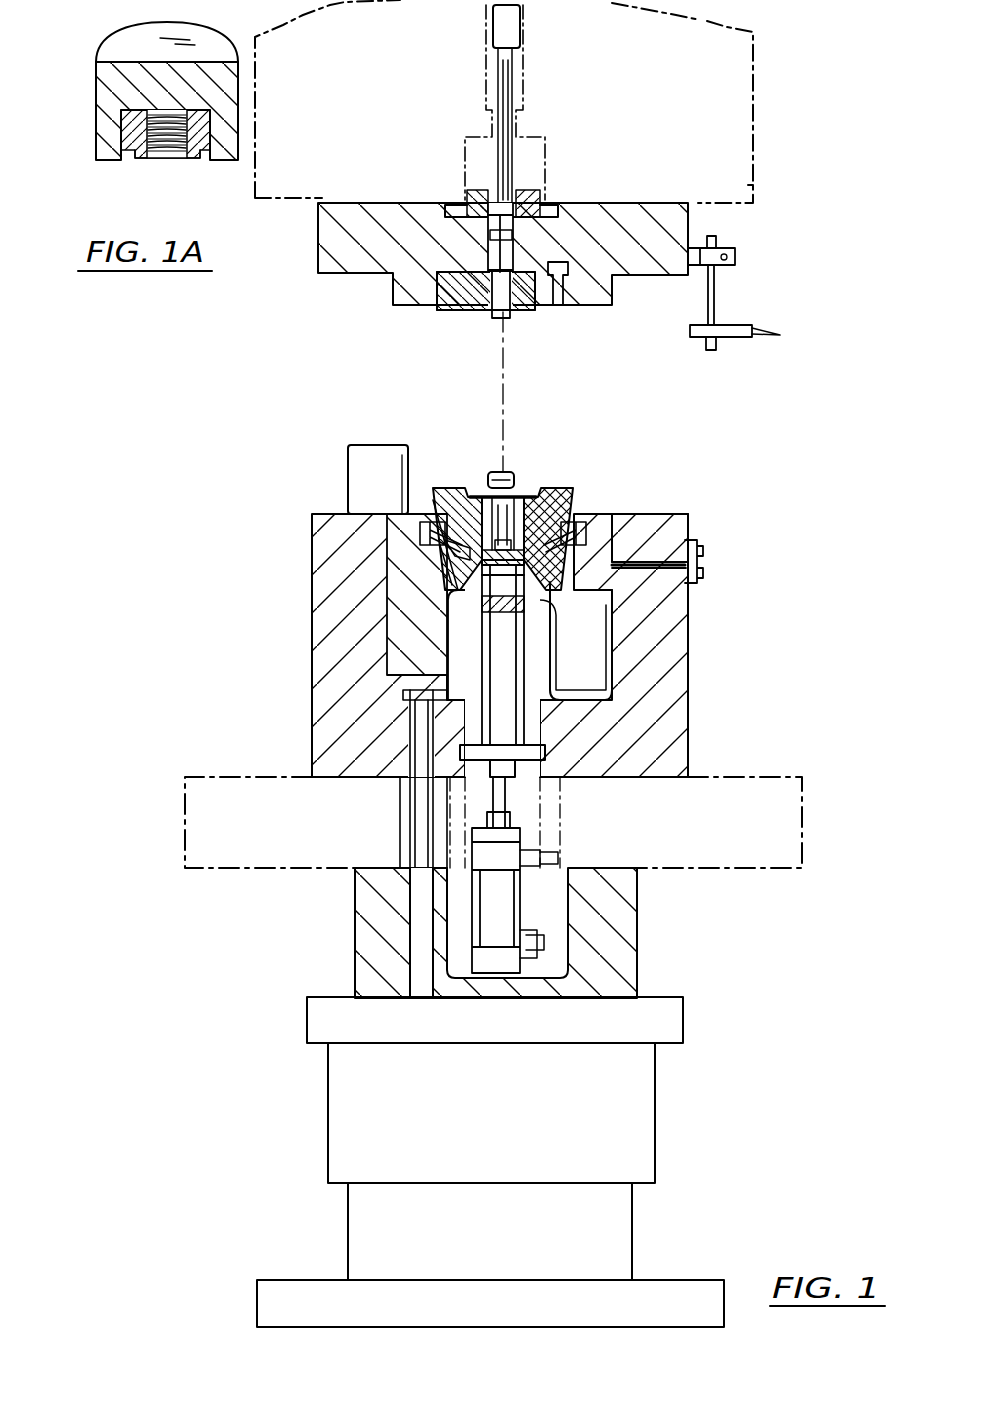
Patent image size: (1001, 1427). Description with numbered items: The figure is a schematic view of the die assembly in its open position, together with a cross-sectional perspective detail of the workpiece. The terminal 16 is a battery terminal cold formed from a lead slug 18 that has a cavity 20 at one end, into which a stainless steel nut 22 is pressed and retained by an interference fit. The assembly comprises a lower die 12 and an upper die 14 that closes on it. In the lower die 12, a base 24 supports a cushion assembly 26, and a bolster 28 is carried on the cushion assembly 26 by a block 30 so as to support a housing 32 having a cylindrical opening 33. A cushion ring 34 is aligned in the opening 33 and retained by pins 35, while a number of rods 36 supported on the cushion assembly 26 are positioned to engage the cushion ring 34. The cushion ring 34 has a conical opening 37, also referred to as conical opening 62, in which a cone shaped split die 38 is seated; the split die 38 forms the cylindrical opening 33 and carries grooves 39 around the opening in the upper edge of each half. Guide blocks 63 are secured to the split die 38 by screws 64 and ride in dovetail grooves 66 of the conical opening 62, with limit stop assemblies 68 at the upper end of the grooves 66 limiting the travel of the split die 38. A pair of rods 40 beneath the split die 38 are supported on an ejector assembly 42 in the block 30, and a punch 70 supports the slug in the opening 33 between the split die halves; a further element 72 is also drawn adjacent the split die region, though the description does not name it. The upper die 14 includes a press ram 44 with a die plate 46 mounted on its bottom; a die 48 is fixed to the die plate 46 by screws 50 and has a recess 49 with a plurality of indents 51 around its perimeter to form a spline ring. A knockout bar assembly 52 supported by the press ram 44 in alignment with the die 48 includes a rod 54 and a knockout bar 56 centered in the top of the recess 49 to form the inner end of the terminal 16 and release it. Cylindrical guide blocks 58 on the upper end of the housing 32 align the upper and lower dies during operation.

In FIG. 1, the lower die 12 is at (542, 691).
In FIG. 1, the upper die 14 is at (770, 136).
In FIG. 1A, the terminal 16 is at (134, 118).
In FIG. 1, the terminal 16 is at (506, 466).
In FIG. 1A, the lead slug 18 is at (96, 72).
In FIG. 1A, the cavity 20 is at (203, 155).
In FIG. 1A, the stainless steel nut 22 is at (138, 160).
In FIG. 1, the base 24 is at (635, 1258).
In FIG. 1, the cushion assembly 26 is at (668, 1090).
In FIG. 1, the bolster 28 is at (804, 860).
In FIG. 1, the block 30 is at (640, 970).
In FIG. 1, the housing 32 is at (688, 712).
In FIG. 1, the cylindrical opening 33 is at (392, 640).
In FIG. 1, the cushion ring 34 is at (612, 520).
In FIG. 1, the pins 35 is at (662, 562).
In FIG. 1, the rods 36 is at (415, 932).
In FIG. 1, the conical opening 37 is at (524, 520).
In FIG. 1, the split die 38 is at (440, 512).
In FIG. 1, the grooves 39 is at (482, 520).
In FIG. 1, the rods 40 is at (522, 690).
In FIG. 1, the ejector assembly 42 is at (524, 906).
In FIG. 1, the press ram 44 is at (755, 188).
In FIG. 1, the die plate 46 is at (352, 262).
In FIG. 1, the die 48 is at (440, 304).
In FIG. 1, the recess 49 is at (490, 243).
In FIG. 1, the screws 50 is at (548, 308).
In FIG. 1, the indents 51 is at (508, 325).
In FIG. 1, the knockout bar assembly 52 is at (468, 95).
In FIG. 1, the rod 54 is at (513, 157).
In FIG. 1, the knockout bar 56 is at (506, 252).
In FIG. 1, the cylindrical guide blocks 58 is at (346, 455).
In FIG. 1, the conical opening 62 is at (458, 568).
In FIG. 1, the guide blocks 63 is at (465, 547).
In FIG. 1, the screws 64 is at (442, 552).
In FIG. 1, the dovetail grooves 66 is at (553, 585).
In FIG. 1, the limit stop assemblies 68 is at (420, 531).
In FIG. 1, the punch 70 is at (505, 612).
In FIG. 1, the return spring 72 is at (562, 540).